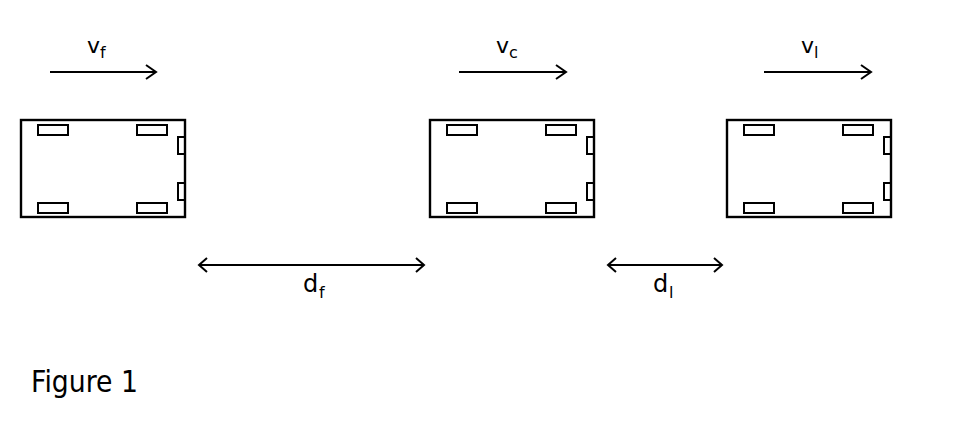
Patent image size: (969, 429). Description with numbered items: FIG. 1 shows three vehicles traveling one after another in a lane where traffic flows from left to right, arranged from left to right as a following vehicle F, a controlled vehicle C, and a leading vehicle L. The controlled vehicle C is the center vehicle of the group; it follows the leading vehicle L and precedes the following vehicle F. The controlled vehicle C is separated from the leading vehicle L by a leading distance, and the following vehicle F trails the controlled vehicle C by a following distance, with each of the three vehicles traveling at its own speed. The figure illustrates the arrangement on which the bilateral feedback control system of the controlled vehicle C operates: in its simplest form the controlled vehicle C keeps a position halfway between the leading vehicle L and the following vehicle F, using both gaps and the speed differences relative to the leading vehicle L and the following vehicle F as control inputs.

The following vehicle F is at (103, 168).
The controlled vehicle C is at (512, 168).
The leading vehicle L is at (809, 168).